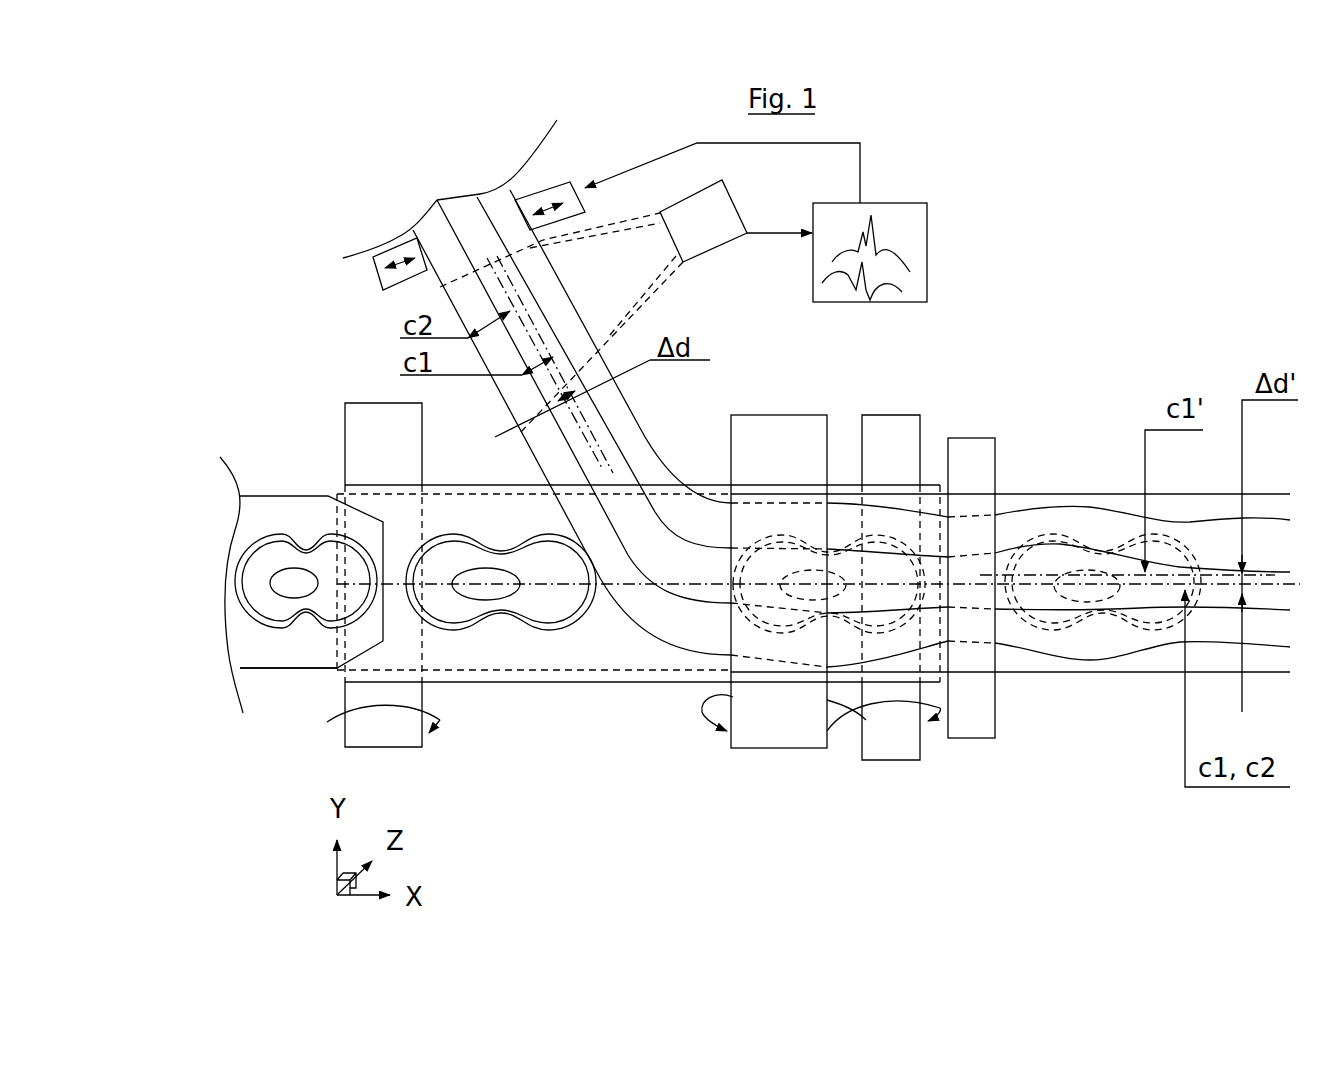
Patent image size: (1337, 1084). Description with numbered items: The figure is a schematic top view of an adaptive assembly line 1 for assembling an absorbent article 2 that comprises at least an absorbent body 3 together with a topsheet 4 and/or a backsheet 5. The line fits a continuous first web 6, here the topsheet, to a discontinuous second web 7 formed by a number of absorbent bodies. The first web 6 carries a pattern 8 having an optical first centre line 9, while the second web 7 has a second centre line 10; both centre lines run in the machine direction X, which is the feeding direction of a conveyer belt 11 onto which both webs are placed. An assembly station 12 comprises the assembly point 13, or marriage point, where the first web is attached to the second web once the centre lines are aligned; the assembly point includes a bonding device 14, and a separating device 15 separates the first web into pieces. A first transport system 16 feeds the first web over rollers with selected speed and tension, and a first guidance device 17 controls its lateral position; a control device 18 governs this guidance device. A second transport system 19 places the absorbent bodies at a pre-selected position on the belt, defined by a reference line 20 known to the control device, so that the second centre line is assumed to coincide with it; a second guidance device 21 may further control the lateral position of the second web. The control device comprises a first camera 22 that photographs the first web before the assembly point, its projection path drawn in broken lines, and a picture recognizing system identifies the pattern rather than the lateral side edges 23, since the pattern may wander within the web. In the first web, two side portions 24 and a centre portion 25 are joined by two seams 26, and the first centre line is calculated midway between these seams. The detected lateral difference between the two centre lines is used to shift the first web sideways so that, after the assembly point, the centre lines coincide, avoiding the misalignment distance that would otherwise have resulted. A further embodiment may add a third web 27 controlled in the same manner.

The adaptive assembly line 1 is at (1137, 262).
The absorbent article 2 is at (1042, 598).
The absorbent body 3 is at (533, 607).
The topsheet 4 is at (433, 218).
The backsheet 5 is at (337, 647).
The first web 6 is at (463, 228).
The second web 7 is at (553, 598).
The pattern 8 is at (545, 310).
The first centre line 9 is at (1152, 590).
The second centre line 10 is at (566, 588).
The conveyer belt 11 is at (657, 684).
The assembly station 12 is at (843, 455).
The assembly point 13 is at (837, 530).
The bonding device 14 is at (790, 468).
The separating device 15 is at (988, 488).
The first transport system 16 is at (345, 277).
The first guidance device 17 is at (380, 280).
The control device 18 is at (910, 230).
The second transport system 19 is at (303, 533).
The reference line 20 is at (365, 582).
The second guidance device 21 is at (303, 661).
The first camera 22 is at (712, 231).
The lateral side edges 23 is at (1033, 512).
The side portions 24 is at (715, 535).
The centre portion 25 is at (687, 577).
The seams 26 is at (1080, 543).
The third web 27 is at (340, 641).